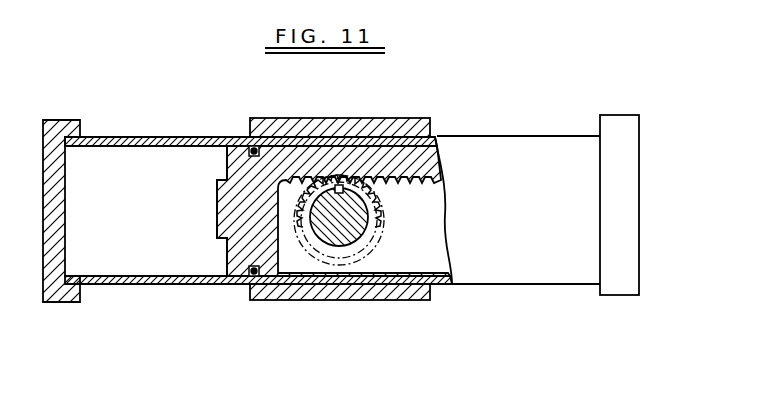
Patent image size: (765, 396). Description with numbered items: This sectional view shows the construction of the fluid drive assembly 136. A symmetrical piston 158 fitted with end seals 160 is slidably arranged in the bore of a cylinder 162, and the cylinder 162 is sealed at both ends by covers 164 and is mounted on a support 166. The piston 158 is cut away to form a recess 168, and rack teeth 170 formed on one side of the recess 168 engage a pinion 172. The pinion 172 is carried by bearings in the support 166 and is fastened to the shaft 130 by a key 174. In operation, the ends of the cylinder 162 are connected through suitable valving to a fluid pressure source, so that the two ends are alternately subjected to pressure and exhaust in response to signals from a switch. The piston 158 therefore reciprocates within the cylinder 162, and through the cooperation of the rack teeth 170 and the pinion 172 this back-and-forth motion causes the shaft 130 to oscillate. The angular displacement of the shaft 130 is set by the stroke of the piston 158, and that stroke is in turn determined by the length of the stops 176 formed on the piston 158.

The shaft 130 is at (358, 225).
The fluid drive assembly 136 is at (520, 122).
The symmetrical piston 158 is at (250, 178).
The end seals 160 is at (245, 285).
The cylinder 162 is at (190, 122).
The covers 164 is at (75, 104).
The support 166 is at (362, 122).
The recess 168 is at (387, 263).
The rack teeth 170 is at (437, 182).
The pinion 172 is at (370, 253).
The key 174 is at (342, 190).
The stops 176 is at (217, 227).